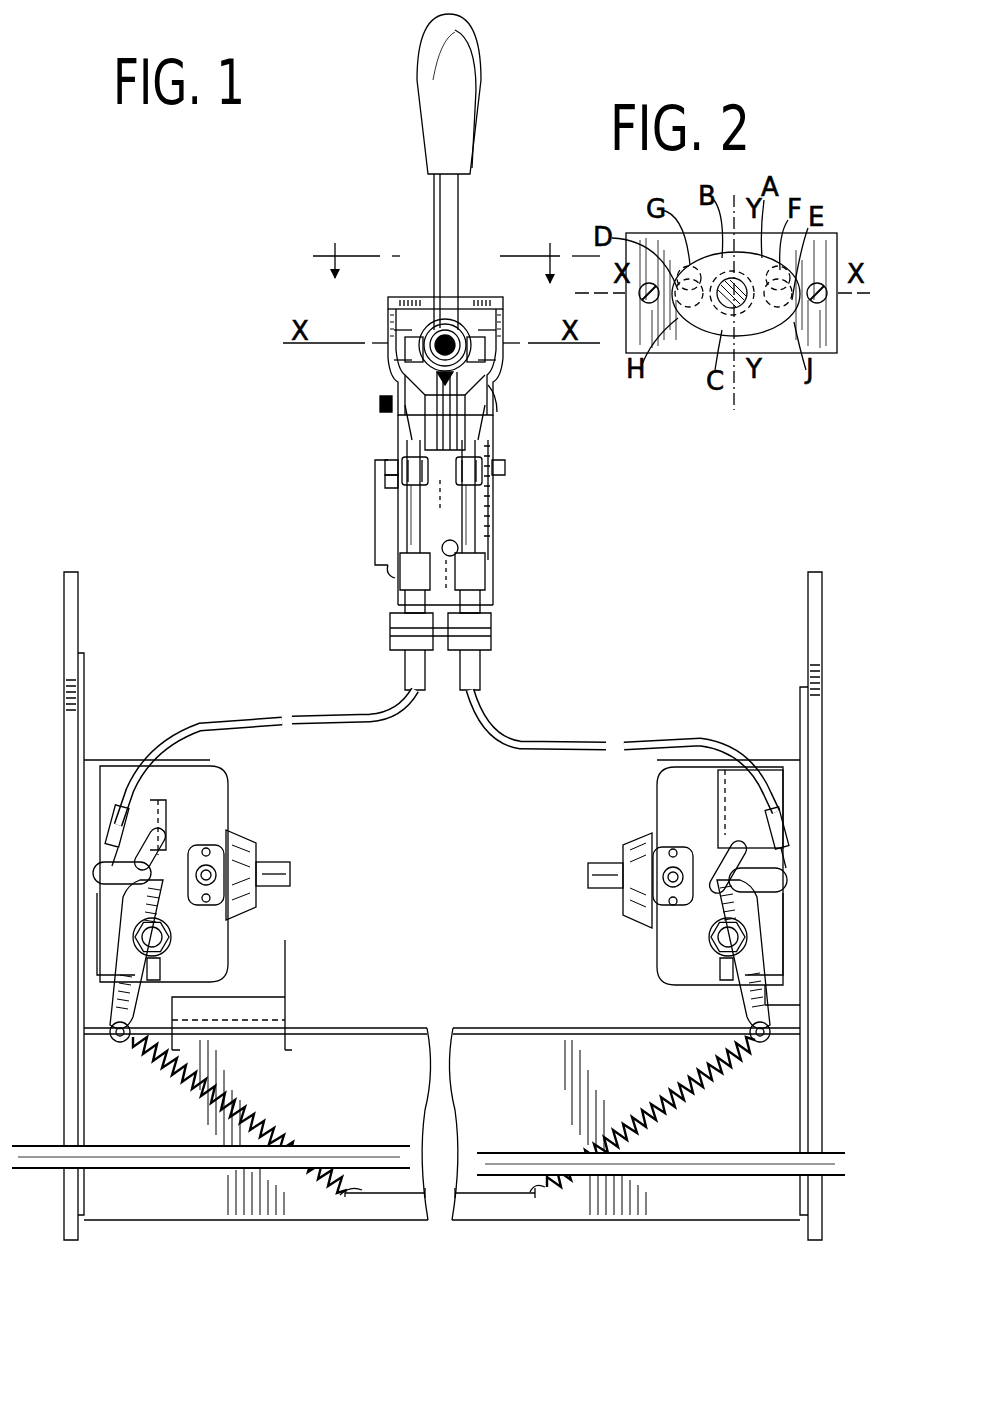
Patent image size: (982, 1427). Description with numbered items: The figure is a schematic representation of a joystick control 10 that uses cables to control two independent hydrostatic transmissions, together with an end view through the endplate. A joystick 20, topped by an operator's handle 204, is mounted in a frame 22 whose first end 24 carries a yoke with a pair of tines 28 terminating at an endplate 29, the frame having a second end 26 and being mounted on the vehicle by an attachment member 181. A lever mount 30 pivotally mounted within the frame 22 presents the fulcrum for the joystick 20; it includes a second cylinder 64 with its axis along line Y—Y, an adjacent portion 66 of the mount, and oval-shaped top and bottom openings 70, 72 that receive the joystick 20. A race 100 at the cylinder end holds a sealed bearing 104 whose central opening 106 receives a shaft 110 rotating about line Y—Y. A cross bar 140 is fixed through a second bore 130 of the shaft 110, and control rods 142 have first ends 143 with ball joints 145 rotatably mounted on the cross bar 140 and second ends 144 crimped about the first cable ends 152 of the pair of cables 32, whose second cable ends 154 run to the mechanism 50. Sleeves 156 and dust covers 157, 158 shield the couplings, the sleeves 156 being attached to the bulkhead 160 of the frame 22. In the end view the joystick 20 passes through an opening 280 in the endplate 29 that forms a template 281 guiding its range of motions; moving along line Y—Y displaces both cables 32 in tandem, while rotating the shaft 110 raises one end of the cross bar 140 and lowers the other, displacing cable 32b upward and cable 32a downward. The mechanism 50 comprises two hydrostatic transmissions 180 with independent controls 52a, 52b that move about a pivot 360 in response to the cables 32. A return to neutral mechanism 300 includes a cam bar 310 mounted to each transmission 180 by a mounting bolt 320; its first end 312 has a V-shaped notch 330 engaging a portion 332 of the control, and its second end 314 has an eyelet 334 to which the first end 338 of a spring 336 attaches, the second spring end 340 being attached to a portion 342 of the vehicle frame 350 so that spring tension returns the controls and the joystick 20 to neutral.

In FIG. 1, the joystick control 10 is at (205, 245).
In FIG. 1, the joystick 20 is at (500, 120).
In FIG. 1, the frame 22 is at (565, 480).
In FIG. 1, the first end of the frame 24 is at (318, 302).
In FIG. 1, the second end of the frame 26 is at (345, 383).
In FIG. 1, the tines 28 is at (403, 372).
In FIG. 1, the endplate 29 is at (395, 298).
In FIG. 2, the endplate 29 is at (828, 355).
In FIG. 1, the lever mount 30 is at (465, 322).
In FIG. 1, the cables 32 is at (295, 557).
In FIG. 1, the cable 32a is at (596, 742).
In FIG. 1, the cable 32b is at (238, 715).
In FIG. 1, the mechanism 50 is at (150, 695).
In FIG. 1, the independent control 52a is at (705, 905).
In FIG. 1, the independent control 52b is at (203, 862).
In FIG. 1, the second cylinder 64 is at (470, 388).
In FIG. 1, the ball socket 66 is at (480, 312).
In FIG. 1, the top opening 70 is at (433, 305).
In FIG. 1, the bottom opening 72 is at (467, 420).
In FIG. 1, the race 100 is at (420, 405).
In FIG. 1, the sealed bearing 104 is at (445, 430).
In FIG. 1, the central opening 106 is at (448, 318).
In FIG. 1, the shaft 110 is at (490, 335).
In FIG. 1, the second bore 130 is at (406, 342).
In FIG. 1, the cross bar 140 is at (482, 355).
In FIG. 1, the control rods 142 is at (388, 466).
In FIG. 1, the first end of control rod 143 is at (412, 432).
In FIG. 1, the second end of control rod 144 is at (392, 480).
In FIG. 1, the ball joints 145 is at (410, 352).
In FIG. 1, the first cable end 152 is at (408, 705).
In FIG. 1, the second cable end 154 is at (150, 750).
In FIG. 1, the sleeves 156 is at (478, 515).
In FIG. 1, the dust cover 157 is at (484, 485).
In FIG. 1, the dust cover 158 is at (480, 580).
In FIG. 1, the bulkhead 160 is at (492, 634).
In FIG. 1, the hydrostatic transmissions 180 is at (222, 795).
In FIG. 1, the attachment member 181 is at (378, 500).
In FIG. 1, the operator's handle 204 is at (420, 48).
In FIG. 2, the opening 280 is at (762, 330).
In FIG. 2, the template 281 is at (690, 322).
In FIG. 1, the return to neutral mechanism 300 is at (55, 938).
In FIG. 1, the cam bar 310 is at (170, 937).
In FIG. 1, the first end of the cam bar 312 is at (165, 885).
In FIG. 1, the second end of the cam bar 314 is at (130, 1005).
In FIG. 1, the mounting bolt 320 is at (155, 950).
In FIG. 1, the V-shaped notch 330 is at (150, 890).
In FIG. 1, the portion of the motor control 332 is at (138, 860).
In FIG. 1, the eyelet 334 is at (140, 1032).
In FIG. 1, the spring 336 is at (168, 1060).
In FIG. 1, the first spring end 338 is at (145, 1050).
In FIG. 1, the second spring end 340 is at (350, 1182).
In FIG. 1, the portion of frame 342 is at (408, 1222).
In FIG. 1, the frame of the vehicle 350 is at (395, 1010).
In FIG. 1, the pivot 360 is at (215, 870).